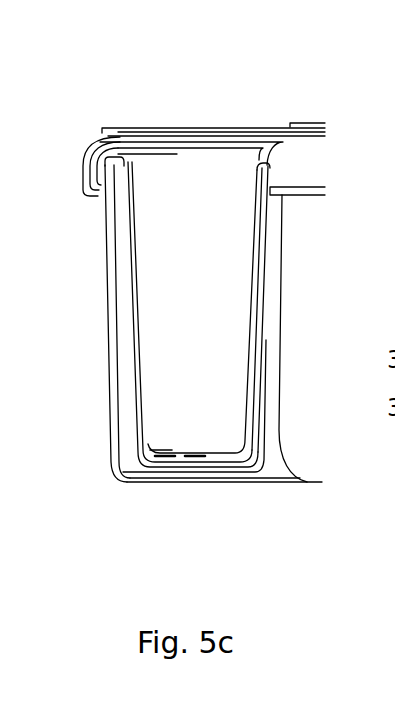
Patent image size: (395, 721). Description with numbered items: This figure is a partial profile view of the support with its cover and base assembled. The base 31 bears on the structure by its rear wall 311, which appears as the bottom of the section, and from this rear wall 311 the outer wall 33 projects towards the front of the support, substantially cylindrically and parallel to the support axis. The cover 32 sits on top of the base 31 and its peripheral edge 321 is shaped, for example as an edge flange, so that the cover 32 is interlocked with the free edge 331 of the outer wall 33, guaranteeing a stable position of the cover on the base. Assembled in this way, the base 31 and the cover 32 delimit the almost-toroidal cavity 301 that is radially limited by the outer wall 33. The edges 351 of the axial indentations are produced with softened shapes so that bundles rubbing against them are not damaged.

The base 31 is at (288, 495).
The rear wall 311 is at (197, 453).
The cover 32 is at (312, 112).
The lid flange 321 is at (196, 127).
The outer wall 33 is at (106, 270).
The free edge 331 is at (118, 158).
The edges 351 is at (255, 258).
The cavity 301 is at (218, 357).